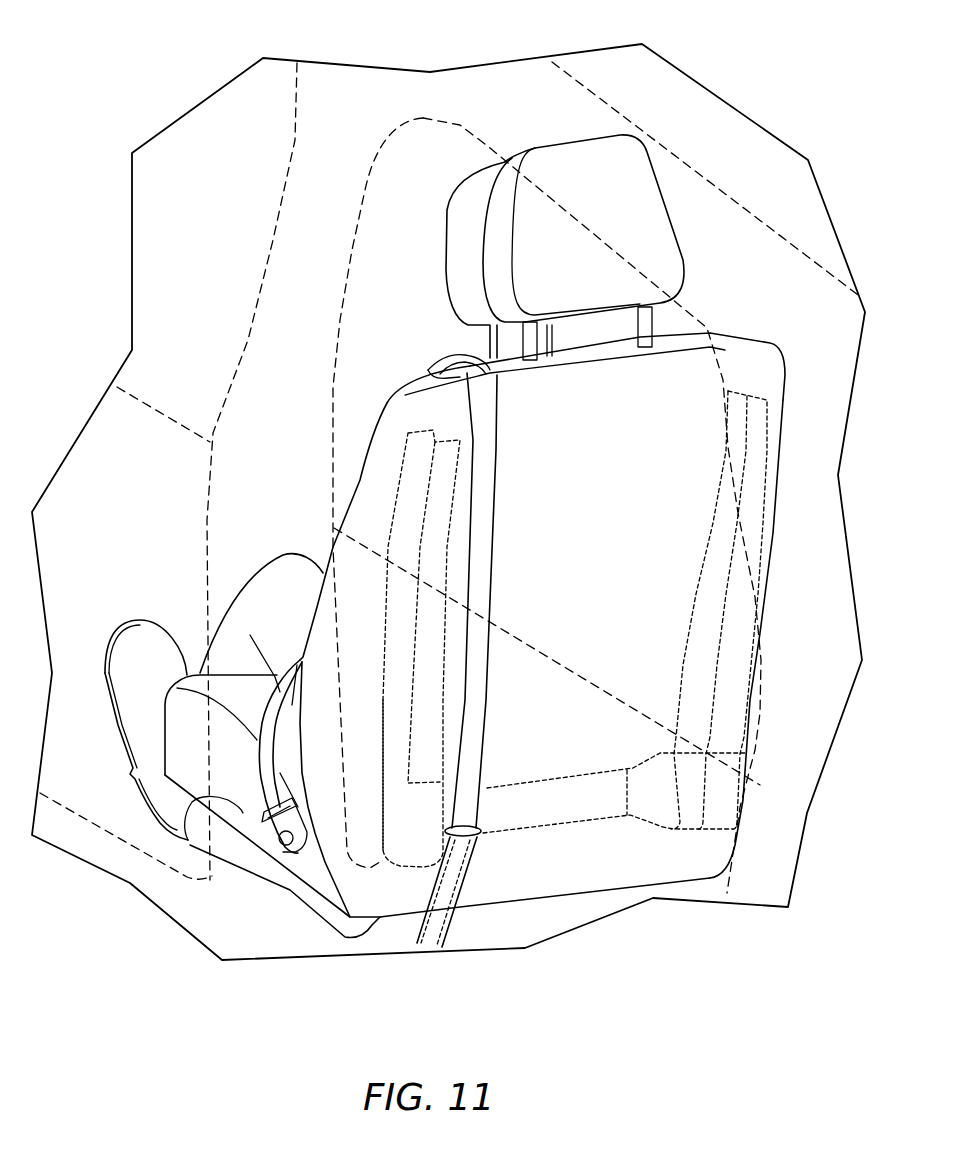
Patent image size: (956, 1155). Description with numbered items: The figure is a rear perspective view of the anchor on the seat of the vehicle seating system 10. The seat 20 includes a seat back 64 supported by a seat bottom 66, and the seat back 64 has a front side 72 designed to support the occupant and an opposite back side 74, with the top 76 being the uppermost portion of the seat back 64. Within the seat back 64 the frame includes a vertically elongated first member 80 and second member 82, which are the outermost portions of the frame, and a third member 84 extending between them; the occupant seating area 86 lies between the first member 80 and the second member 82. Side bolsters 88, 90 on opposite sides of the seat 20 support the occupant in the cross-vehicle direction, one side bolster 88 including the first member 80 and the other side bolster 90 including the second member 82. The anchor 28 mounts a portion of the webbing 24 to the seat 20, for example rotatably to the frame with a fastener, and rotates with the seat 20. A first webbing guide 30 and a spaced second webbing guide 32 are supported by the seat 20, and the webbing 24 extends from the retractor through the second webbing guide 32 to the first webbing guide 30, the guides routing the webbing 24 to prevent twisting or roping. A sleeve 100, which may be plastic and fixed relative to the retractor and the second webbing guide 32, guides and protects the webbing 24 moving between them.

The vehicle seating system 10 is at (166, 65).
The seat 20 is at (747, 306).
The webbing 24 is at (496, 540).
The anchor 28 is at (275, 852).
The first webbing guide 30 is at (463, 360).
The second webbing guide 32 is at (482, 830).
The seat back 64 is at (765, 360).
The seat bottom 66 is at (240, 803).
The front side 72 is at (407, 353).
The back side 74 is at (397, 410).
The top 76 is at (387, 893).
The first member 80 is at (420, 460).
The second member 82 is at (705, 576).
The third member 84 is at (568, 797).
The occupant seating area 86 is at (333, 353).
The side bolster 88 is at (380, 487).
The side bolster 90 is at (768, 387).
The sleeve 100 is at (470, 873).